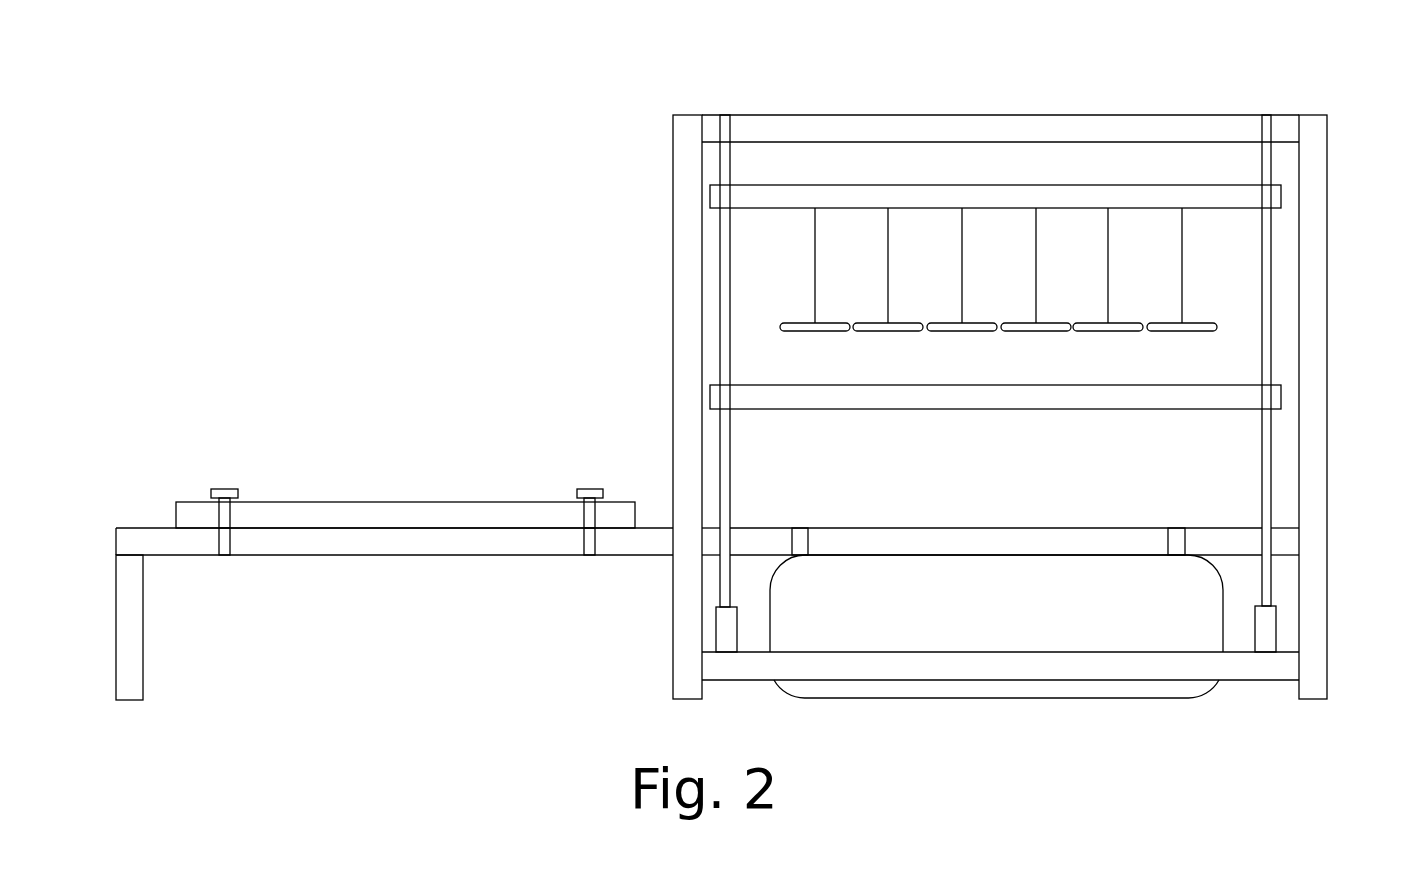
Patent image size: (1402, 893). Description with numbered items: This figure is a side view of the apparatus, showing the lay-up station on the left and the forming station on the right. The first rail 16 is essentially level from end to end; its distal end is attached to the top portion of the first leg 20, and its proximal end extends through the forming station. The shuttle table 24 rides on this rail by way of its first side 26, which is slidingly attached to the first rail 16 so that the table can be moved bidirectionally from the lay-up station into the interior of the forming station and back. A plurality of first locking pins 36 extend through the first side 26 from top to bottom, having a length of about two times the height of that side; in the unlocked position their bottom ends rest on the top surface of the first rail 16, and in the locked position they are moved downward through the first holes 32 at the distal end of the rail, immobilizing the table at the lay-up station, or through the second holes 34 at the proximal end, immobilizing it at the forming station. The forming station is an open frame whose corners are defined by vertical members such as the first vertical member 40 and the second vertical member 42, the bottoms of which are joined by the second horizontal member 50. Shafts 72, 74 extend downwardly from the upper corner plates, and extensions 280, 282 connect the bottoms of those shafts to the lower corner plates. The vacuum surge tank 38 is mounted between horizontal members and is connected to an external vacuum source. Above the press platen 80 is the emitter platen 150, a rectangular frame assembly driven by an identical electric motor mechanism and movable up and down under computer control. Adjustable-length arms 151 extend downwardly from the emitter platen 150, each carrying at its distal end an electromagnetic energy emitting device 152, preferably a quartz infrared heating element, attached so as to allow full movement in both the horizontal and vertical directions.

The first rail 16 is at (400, 555).
The first leg 20 is at (139, 640).
The shuttle table 24 is at (308, 498).
The first side 26 is at (402, 502).
The first holes 32 is at (222, 558).
The second holes 34 is at (800, 528).
The first locking pins 36 is at (226, 489).
The vacuum surge tank 38 is at (1031, 622).
The first vertical member 40 is at (673, 634).
The second vertical member 42 is at (1327, 608).
The second horizontal member 50 is at (935, 654).
The shaft 72 is at (730, 285).
The shaft 74 is at (1262, 236).
The press platen 80 is at (978, 410).
The emitter platen 150 is at (1175, 185).
The arm 151 is at (888, 235).
The electromagnetic energy emitting device 152 is at (895, 331).
The extension 280 is at (737, 632).
The extension 282 is at (1258, 612).